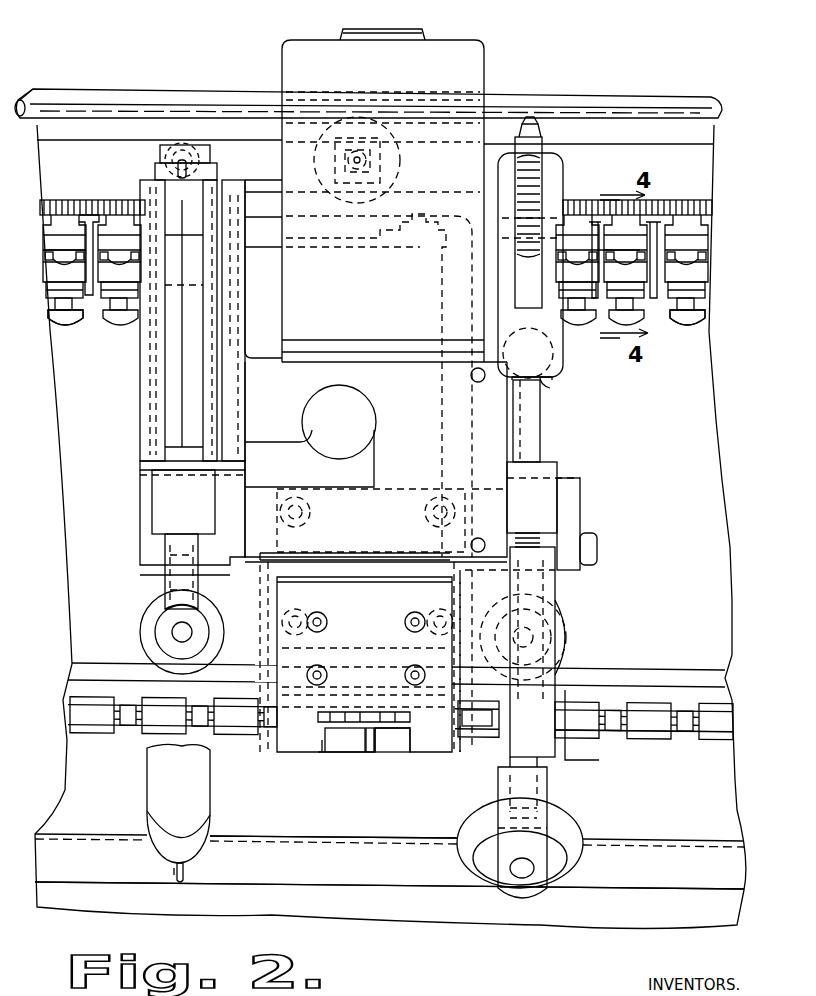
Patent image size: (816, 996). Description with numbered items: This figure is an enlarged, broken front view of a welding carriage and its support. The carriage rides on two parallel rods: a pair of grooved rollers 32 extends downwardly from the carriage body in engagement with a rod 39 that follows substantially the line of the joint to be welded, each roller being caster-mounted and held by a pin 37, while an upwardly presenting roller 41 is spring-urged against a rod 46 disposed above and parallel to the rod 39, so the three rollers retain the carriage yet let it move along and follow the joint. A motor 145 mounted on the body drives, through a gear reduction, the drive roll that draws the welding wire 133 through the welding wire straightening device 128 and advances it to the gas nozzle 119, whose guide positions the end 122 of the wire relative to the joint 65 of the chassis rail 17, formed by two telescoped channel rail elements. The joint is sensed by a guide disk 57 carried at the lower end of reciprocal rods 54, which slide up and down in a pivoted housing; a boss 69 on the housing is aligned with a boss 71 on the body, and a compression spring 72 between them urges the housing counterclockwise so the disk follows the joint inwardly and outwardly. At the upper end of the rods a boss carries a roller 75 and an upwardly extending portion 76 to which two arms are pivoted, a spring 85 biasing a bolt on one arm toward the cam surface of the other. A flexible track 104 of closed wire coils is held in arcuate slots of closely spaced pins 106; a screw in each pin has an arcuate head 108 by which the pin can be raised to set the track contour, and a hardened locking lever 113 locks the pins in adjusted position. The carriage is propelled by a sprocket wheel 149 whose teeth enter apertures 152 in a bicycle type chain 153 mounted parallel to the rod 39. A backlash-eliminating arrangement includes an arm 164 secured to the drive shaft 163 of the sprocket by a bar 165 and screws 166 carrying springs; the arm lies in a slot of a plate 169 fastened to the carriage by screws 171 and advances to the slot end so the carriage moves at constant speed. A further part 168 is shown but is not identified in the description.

The rod 46 is at (55, 103).
The motor 145 is at (480, 48).
The upwardly presenting roller 41 is at (355, 118).
The reciprocal rods 54 is at (535, 432).
The welding wire straightening device 128 is at (180, 368).
The pin 37 is at (145, 627).
The flexible track 104 is at (82, 222).
The pins 106 is at (112, 222).
The hardened locking lever 113 is at (117, 265).
The arcuate head 108 is at (122, 320).
The upwardly extending portion 76 is at (510, 212).
The spring 85 is at (533, 178).
The roller 75 is at (548, 388).
The boss 71 is at (540, 490).
The spring 72 is at (520, 540).
The boss 69 is at (545, 585).
The grooved rollers 32 is at (566, 625).
The rod 39 is at (596, 680).
The apertures 152 is at (678, 720).
The chain 153 is at (664, 748).
The guide disk 57 is at (565, 815).
The joint 65 is at (640, 886).
The plate 169 is at (290, 737).
The screws 171 is at (322, 672).
The drive shaft 163 is at (378, 715).
The bar 165 is at (345, 752).
The screws 166 is at (370, 752).
The arm 164 is at (398, 757).
The lug 168 is at (322, 765).
The sprocket wheel 149 is at (474, 738).
The chassis rail 17 is at (371, 832).
The gas nozzle 119 is at (205, 786).
The end of the wire 122 is at (195, 870).
The welding wire 133 is at (160, 876).